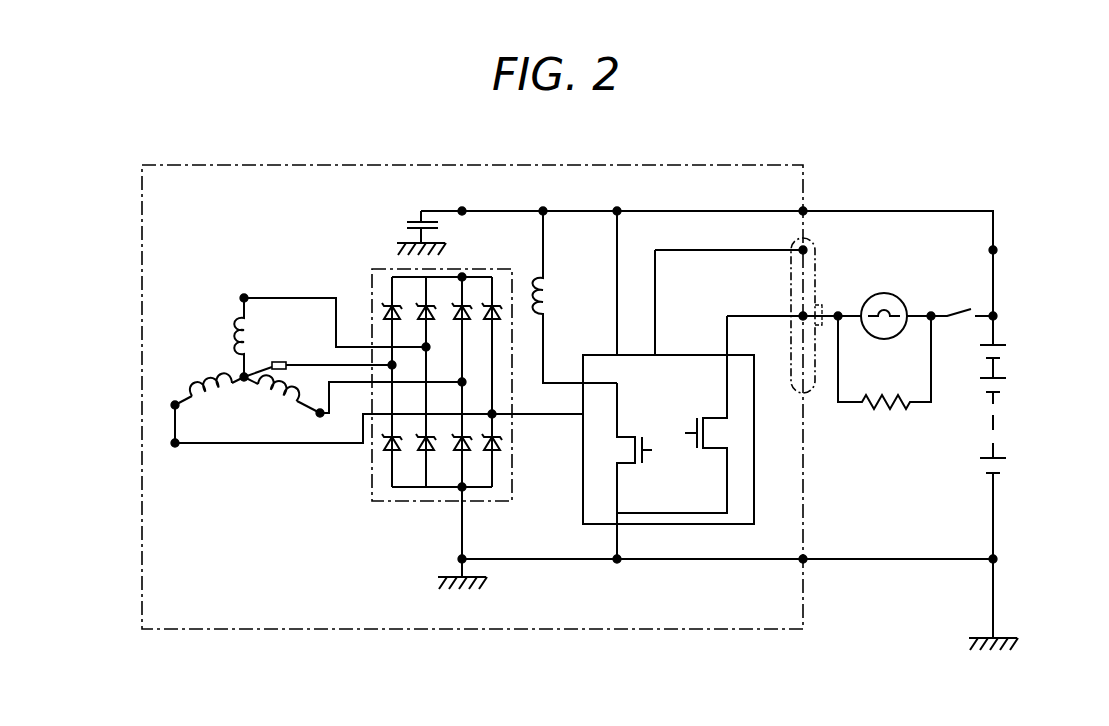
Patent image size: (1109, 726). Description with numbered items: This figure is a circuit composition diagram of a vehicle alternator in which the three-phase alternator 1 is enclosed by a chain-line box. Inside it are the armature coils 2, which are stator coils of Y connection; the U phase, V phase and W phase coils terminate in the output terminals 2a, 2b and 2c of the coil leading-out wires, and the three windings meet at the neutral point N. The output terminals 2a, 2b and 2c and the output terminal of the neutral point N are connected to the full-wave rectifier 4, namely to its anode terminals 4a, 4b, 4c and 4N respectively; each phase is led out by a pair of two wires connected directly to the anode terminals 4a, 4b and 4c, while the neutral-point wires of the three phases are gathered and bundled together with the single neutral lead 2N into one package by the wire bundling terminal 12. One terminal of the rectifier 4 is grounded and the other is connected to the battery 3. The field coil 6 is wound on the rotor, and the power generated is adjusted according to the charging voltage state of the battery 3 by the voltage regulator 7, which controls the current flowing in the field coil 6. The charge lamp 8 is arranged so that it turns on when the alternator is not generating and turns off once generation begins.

The three-phase alternator 1 is at (388, 165).
The armature coils 2 is at (325, 385).
The output terminal of U phase coil 2a is at (243, 298).
The output terminal of V phase coil 2b is at (174, 402).
The output terminal of W phase coil 2c is at (315, 420).
The neutral point lead 2N is at (266, 360).
The neutral point N is at (247, 381).
The wire bundling terminal 12 is at (280, 361).
The full-wave rectifier 4 is at (477, 413).
The anode terminal 4a is at (440, 337).
The anode terminal 4b is at (499, 412).
The anode terminal 4c is at (473, 371).
The anode terminal 4N is at (407, 368).
The field coil 6 is at (550, 289).
The voltage regulator 7 is at (712, 527).
The charge lamp 8 is at (884, 293).
The battery 3 is at (985, 432).